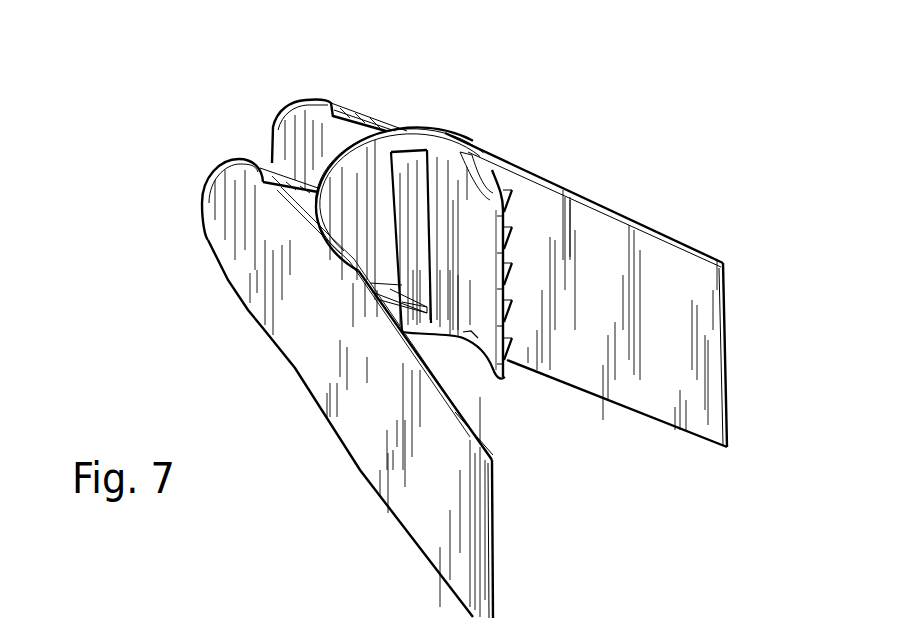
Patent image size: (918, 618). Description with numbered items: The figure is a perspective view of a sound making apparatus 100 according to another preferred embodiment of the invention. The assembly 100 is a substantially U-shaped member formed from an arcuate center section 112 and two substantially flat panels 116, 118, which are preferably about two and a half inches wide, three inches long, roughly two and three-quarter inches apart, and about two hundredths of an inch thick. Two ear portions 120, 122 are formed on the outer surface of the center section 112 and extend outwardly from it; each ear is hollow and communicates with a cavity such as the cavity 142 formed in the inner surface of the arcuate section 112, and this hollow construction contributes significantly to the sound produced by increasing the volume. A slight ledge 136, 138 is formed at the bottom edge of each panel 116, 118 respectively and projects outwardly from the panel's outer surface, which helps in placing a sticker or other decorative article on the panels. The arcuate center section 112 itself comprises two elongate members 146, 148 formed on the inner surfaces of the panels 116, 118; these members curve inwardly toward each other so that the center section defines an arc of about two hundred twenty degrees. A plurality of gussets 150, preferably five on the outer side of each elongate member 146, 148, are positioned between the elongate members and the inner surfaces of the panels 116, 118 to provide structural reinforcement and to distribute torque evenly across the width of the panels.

The sound making apparatus 100 is at (130, 136).
The arcuate center section 112 is at (450, 190).
The panel 116 is at (371, 427).
The panel 118 is at (597, 240).
The ear portion 120 is at (235, 228).
The ear portion 122 is at (293, 127).
The ledge 136 is at (497, 562).
The ledge 138 is at (730, 378).
The cavity 142 is at (403, 165).
The elongate member 146 is at (372, 283).
The elongate member 148 is at (490, 170).
The gussets 150 is at (512, 263).